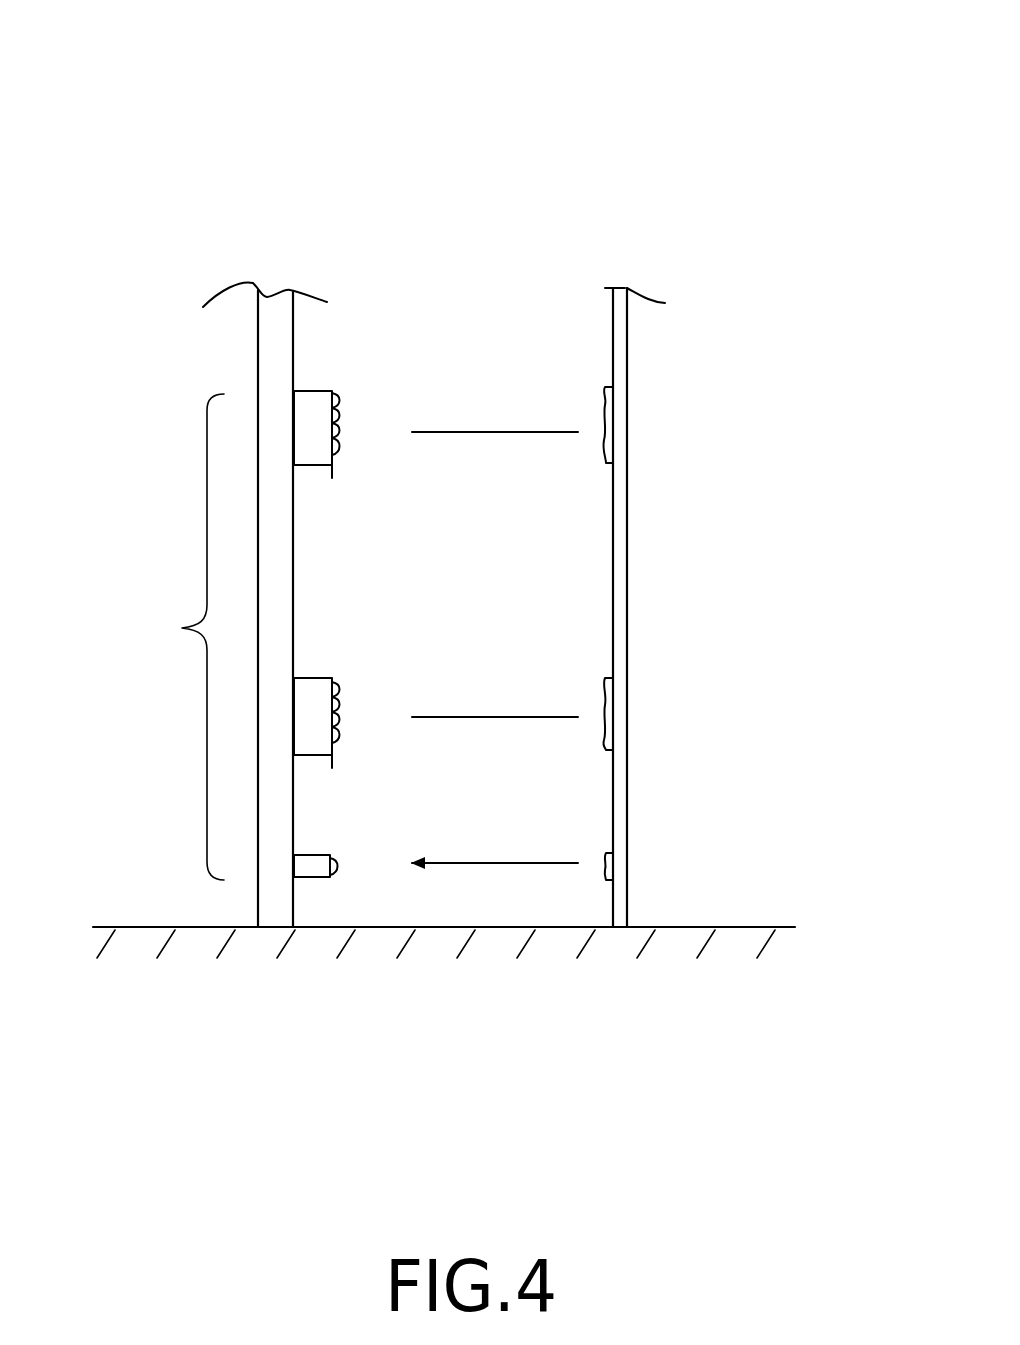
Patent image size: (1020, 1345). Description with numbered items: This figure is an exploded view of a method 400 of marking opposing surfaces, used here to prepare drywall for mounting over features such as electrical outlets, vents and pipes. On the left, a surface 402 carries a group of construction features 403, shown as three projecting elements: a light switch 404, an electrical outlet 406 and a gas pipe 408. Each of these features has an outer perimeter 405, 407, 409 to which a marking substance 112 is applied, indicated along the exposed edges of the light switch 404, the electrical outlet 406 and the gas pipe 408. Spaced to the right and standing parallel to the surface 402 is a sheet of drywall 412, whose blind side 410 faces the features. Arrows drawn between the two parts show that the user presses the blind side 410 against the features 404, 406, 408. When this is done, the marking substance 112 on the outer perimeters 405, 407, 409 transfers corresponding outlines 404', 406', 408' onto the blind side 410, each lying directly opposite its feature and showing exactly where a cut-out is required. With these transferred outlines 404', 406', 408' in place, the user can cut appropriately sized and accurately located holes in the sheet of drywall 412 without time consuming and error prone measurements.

The method 400 is at (203, 145).
The surface 402 is at (310, 338).
The construction features 403 is at (168, 637).
The light switch 404 is at (375, 402).
The outer perimeter of light switch 405 is at (333, 478).
The electrical outlet 406 is at (364, 681).
The outer perimeter of electrical outlet 407 is at (333, 758).
The gas pipe 408 is at (372, 843).
The outer perimeter of gas pipe 409 is at (333, 880).
The marking substance 112 is at (338, 456).
The blind side 410 is at (607, 326).
The outline of light switch 404' is at (663, 462).
The outline of electrical outlet 406' is at (664, 750).
The outline of gas pipe 408' is at (665, 883).
The sheet of drywall 412 is at (620, 928).